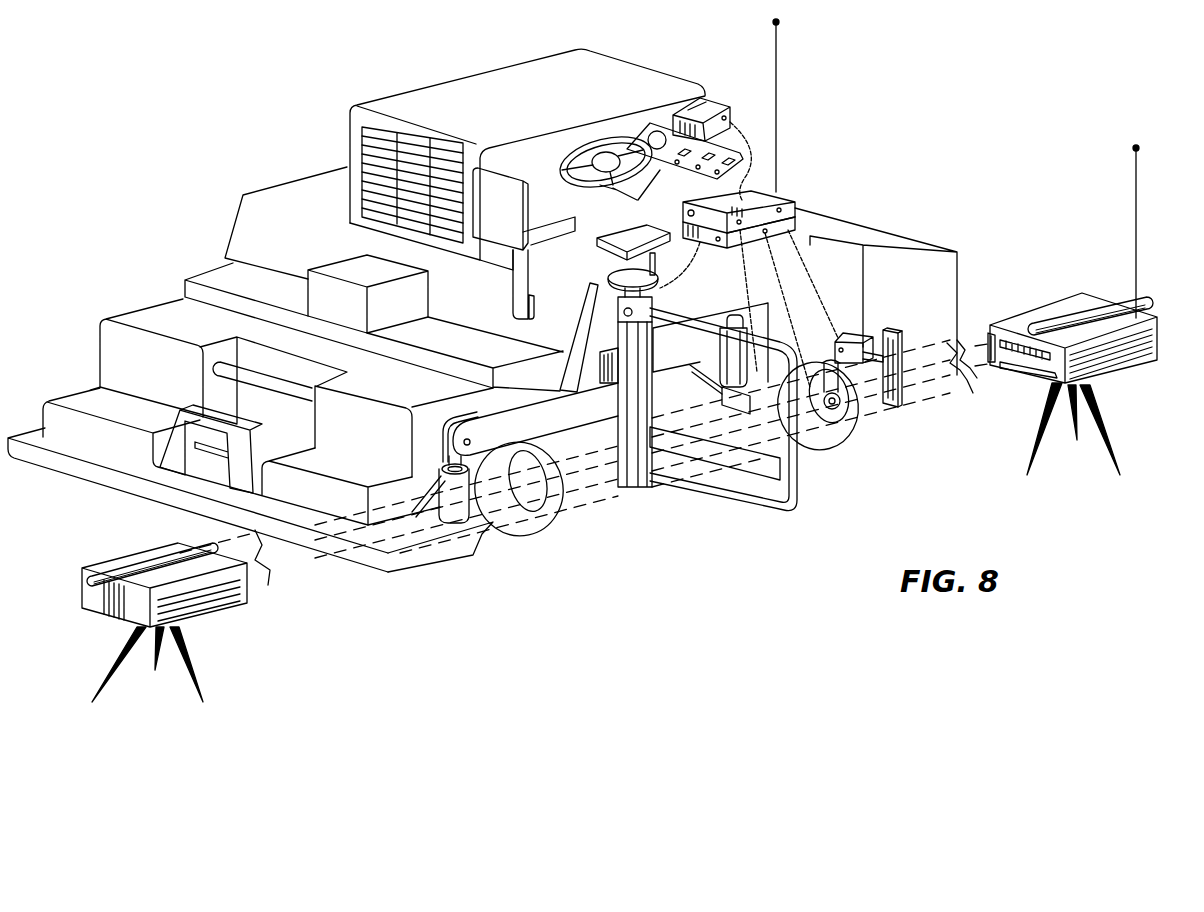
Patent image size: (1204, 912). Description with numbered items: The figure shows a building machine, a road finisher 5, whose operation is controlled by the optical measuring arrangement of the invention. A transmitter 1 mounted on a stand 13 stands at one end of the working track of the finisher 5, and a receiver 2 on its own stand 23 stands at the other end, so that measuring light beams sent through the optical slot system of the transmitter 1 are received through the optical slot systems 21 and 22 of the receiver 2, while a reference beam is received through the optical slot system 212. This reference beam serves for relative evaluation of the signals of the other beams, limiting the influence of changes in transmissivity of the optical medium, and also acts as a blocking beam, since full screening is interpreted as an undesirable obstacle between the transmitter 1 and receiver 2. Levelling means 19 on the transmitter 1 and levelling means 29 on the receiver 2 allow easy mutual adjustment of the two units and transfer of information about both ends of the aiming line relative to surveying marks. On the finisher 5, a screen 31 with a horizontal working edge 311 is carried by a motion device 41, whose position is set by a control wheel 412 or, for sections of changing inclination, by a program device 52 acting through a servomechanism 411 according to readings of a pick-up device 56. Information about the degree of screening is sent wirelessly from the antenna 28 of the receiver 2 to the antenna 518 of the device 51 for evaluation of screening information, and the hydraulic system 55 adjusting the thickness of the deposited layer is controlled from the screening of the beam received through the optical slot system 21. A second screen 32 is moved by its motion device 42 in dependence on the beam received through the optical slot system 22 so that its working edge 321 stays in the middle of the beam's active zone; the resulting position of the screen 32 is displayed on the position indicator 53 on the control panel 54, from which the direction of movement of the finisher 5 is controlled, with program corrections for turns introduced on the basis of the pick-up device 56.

The transmitter 1 is at (145, 607).
The stand 13 is at (188, 650).
The levelling means 19 is at (134, 572).
The receiver 2 is at (1067, 310).
The optical slot system 21 is at (1032, 373).
The optical slot system 22 is at (987, 343).
The optical slot system 212 is at (1070, 363).
The tripod legs 23 is at (1097, 415).
The antenna 28 is at (1133, 207).
The levelling means 29 is at (1062, 322).
The finisher 5 is at (238, 215).
The screen 31 is at (737, 466).
The horizontal working edge 311 is at (793, 468).
The screen 32 is at (888, 330).
The working edge 321 is at (903, 348).
The motion device 41 is at (632, 488).
The servomechanism 411 is at (616, 302).
The control wheel 412 is at (658, 283).
The motion device 42 is at (849, 340).
The device for evaluation of informations 51 is at (794, 202).
The program device 52 is at (795, 220).
The position indicator 53 is at (716, 112).
The control panel 54 is at (652, 130).
The antenna 518 is at (778, 127).
The hydraulic system 55 is at (720, 355).
The pick-up device 56 is at (840, 413).